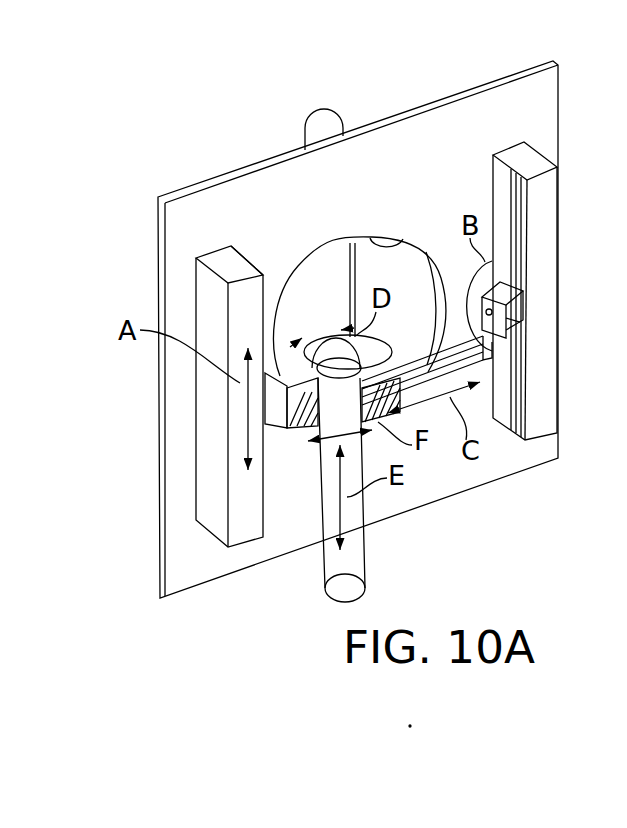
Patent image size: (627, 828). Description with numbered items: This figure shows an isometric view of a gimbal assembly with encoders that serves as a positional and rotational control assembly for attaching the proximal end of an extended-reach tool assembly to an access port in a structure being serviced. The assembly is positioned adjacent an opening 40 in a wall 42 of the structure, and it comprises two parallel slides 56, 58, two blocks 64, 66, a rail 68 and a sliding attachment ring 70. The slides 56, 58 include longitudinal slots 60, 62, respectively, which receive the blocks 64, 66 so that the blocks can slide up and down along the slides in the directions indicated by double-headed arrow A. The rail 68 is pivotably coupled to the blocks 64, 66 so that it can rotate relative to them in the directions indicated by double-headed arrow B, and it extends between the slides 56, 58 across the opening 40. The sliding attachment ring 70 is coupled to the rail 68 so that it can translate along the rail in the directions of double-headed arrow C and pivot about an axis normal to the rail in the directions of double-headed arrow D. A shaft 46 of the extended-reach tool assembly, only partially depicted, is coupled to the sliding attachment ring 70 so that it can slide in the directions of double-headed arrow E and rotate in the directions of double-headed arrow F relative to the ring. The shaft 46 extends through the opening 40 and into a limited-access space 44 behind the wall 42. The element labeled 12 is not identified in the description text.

The pipe 12 is at (367, 507).
The opening 40 is at (392, 240).
The wall 42 is at (378, 199).
The limited-access space 44 is at (425, 329).
The shaft 46 is at (345, 282).
The slide 56 is at (225, 250).
The slide 58 is at (527, 158).
The longitudinal slot 60 is at (262, 268).
The longitudinal slot 62 is at (493, 156).
The block 64 is at (285, 432).
The block 66 is at (521, 305).
The rail 68 is at (517, 320).
The sliding attachment ring 70 is at (332, 342).